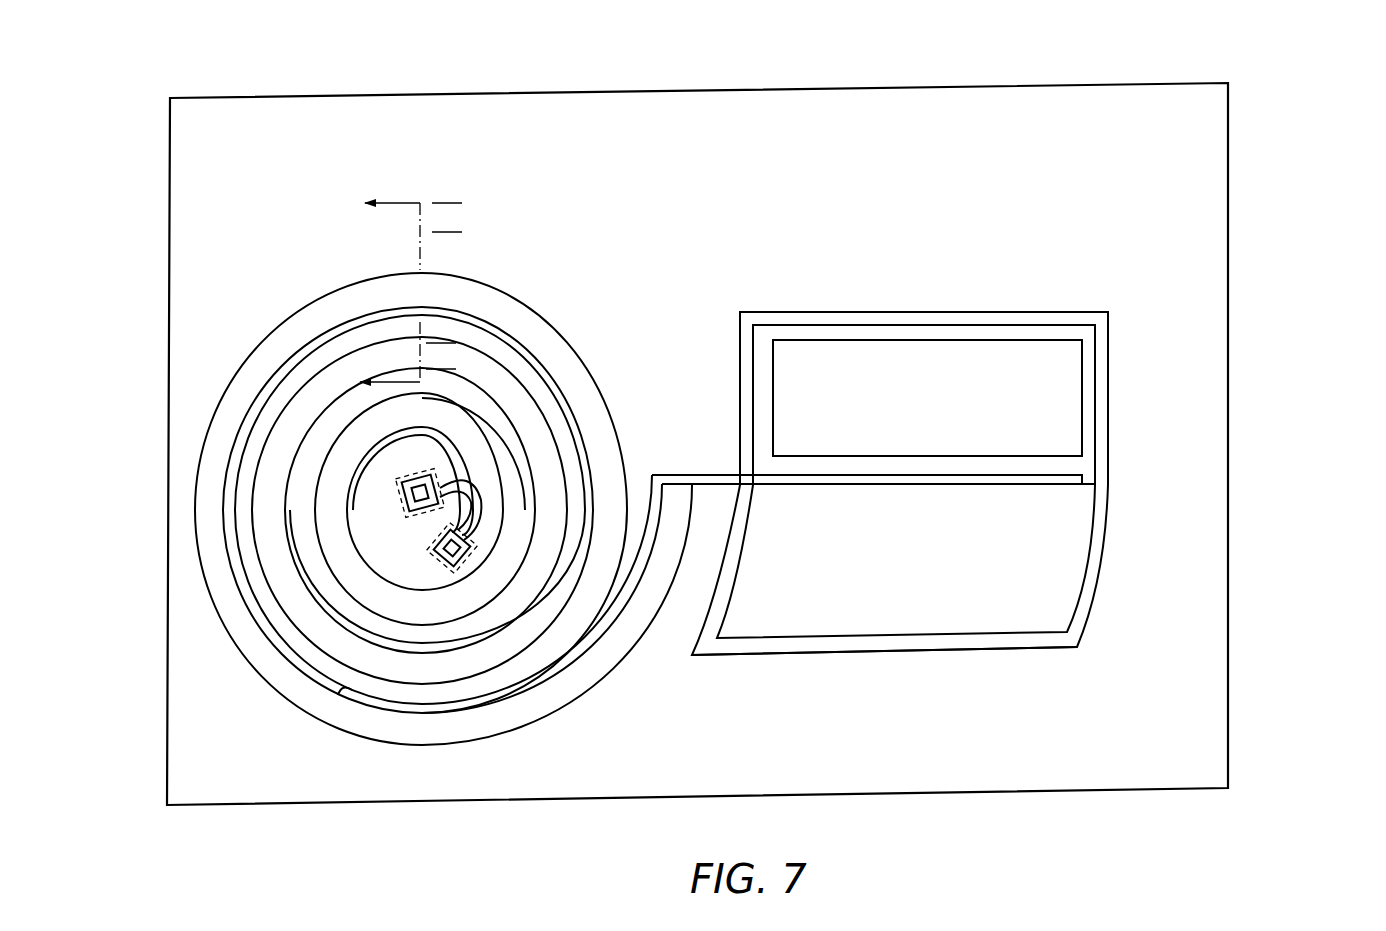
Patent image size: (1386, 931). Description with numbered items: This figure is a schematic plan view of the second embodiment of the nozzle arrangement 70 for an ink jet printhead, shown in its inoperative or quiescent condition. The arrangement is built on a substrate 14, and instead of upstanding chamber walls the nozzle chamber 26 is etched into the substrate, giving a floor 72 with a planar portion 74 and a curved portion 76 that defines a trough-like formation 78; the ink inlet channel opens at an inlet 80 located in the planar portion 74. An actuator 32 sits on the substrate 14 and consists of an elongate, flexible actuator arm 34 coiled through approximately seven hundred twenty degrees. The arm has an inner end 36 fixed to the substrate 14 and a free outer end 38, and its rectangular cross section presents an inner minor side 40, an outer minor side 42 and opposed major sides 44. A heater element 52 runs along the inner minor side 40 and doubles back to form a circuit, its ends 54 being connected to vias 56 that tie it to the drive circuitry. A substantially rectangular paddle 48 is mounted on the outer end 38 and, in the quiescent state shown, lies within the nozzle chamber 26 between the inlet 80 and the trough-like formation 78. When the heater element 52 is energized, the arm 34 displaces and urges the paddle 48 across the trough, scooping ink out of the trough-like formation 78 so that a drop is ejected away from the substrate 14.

The substrate 14 is at (1230, 703).
The nozzle chamber 26 is at (941, 479).
The actuator 32 is at (391, 536).
The actuator arm 34 is at (415, 745).
The inner end 36 is at (412, 522).
The outer end 38 is at (873, 500).
The inner minor side 40 is at (346, 698).
The outer minor side 42 is at (497, 735).
The major side 44 is at (310, 692).
The paddle 48 is at (950, 485).
The heater element 52 is at (535, 690).
The ends 54 is at (470, 530).
The vias 56 is at (405, 492).
The nozzle arrangement 70 is at (728, 450).
The floor 72 is at (1067, 565).
The planar portion 74 is at (1066, 330).
The curved portion 76 is at (898, 614).
The trough-like formation 78 is at (1048, 517).
The inlet 80 is at (1016, 370).